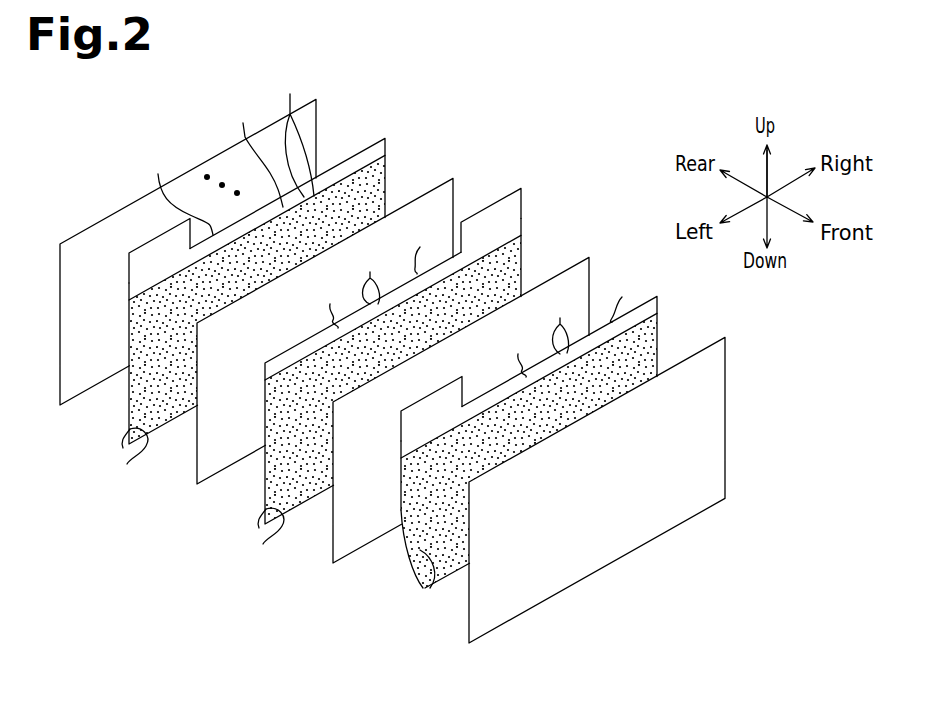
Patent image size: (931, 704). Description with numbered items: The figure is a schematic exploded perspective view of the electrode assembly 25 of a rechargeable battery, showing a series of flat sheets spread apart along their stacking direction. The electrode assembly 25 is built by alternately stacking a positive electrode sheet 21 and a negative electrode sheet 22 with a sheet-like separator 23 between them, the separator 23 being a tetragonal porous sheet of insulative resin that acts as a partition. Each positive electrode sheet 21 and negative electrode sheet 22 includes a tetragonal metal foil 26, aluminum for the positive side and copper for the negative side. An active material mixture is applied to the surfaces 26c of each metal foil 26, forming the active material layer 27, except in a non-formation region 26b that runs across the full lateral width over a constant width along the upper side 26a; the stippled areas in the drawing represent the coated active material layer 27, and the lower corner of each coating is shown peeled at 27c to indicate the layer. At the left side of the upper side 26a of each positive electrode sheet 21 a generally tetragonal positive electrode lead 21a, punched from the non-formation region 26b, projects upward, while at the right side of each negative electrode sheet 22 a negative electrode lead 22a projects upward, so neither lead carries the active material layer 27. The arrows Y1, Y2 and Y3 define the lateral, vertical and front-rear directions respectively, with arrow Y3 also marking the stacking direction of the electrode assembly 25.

The positive electrode sheet 21 is at (386, 143).
The positive electrode lead 21a is at (148, 253).
The negative electrode sheet 22 is at (522, 242).
The negative electrode lead 22a is at (513, 207).
The separator 23 is at (318, 114).
The electrode assembly 25 is at (625, 157).
The metal foil 26 is at (267, 213).
The upper side 26a is at (390, 235).
The non-formation region 26b is at (384, 237).
The surface 26c is at (426, 211).
The active material layer 27 is at (130, 429).
The peeled corner of coating layer 27c is at (293, 538).
The arrow Y1 is at (802, 176).
The arrow Y2 is at (762, 172).
The arrow Y3 is at (793, 210).